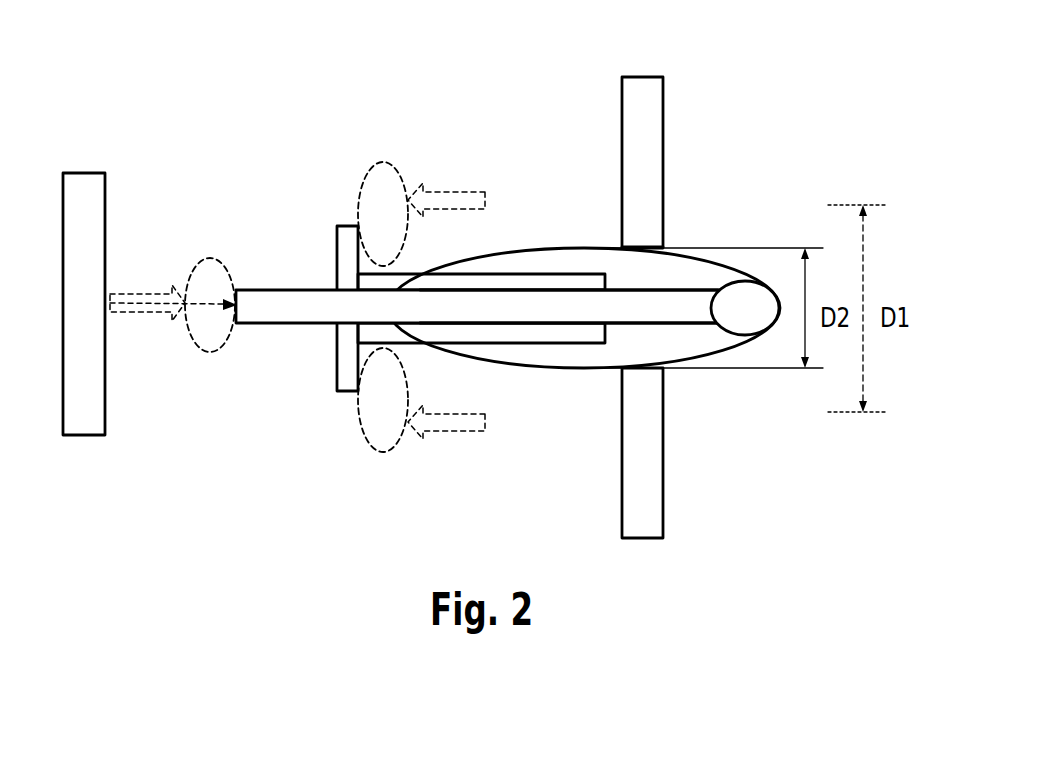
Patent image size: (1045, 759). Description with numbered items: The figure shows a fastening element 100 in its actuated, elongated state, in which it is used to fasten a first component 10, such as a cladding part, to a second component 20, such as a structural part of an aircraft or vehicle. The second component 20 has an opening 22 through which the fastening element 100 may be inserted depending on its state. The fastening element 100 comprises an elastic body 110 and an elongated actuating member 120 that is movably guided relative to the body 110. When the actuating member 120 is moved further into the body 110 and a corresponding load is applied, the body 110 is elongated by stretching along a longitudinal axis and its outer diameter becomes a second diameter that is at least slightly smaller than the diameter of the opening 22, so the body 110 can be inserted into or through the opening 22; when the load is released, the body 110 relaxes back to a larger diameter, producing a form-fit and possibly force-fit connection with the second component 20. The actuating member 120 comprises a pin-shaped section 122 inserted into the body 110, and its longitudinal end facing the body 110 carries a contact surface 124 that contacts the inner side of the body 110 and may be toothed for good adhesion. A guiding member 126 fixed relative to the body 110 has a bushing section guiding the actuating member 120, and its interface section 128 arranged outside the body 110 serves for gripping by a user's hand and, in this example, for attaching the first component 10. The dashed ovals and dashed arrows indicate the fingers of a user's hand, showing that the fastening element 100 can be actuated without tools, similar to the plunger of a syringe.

The first component 10 is at (105, 397).
The second component 20 is at (622, 142).
The opening 22 is at (653, 244).
The fastening element 100 is at (318, 196).
The body 110 is at (558, 255).
The actuating member 120 is at (296, 316).
The pin-shaped section 122 is at (528, 337).
The contact surface 124 is at (752, 315).
The guiding member 126 is at (560, 310).
The interface section 128 is at (348, 363).